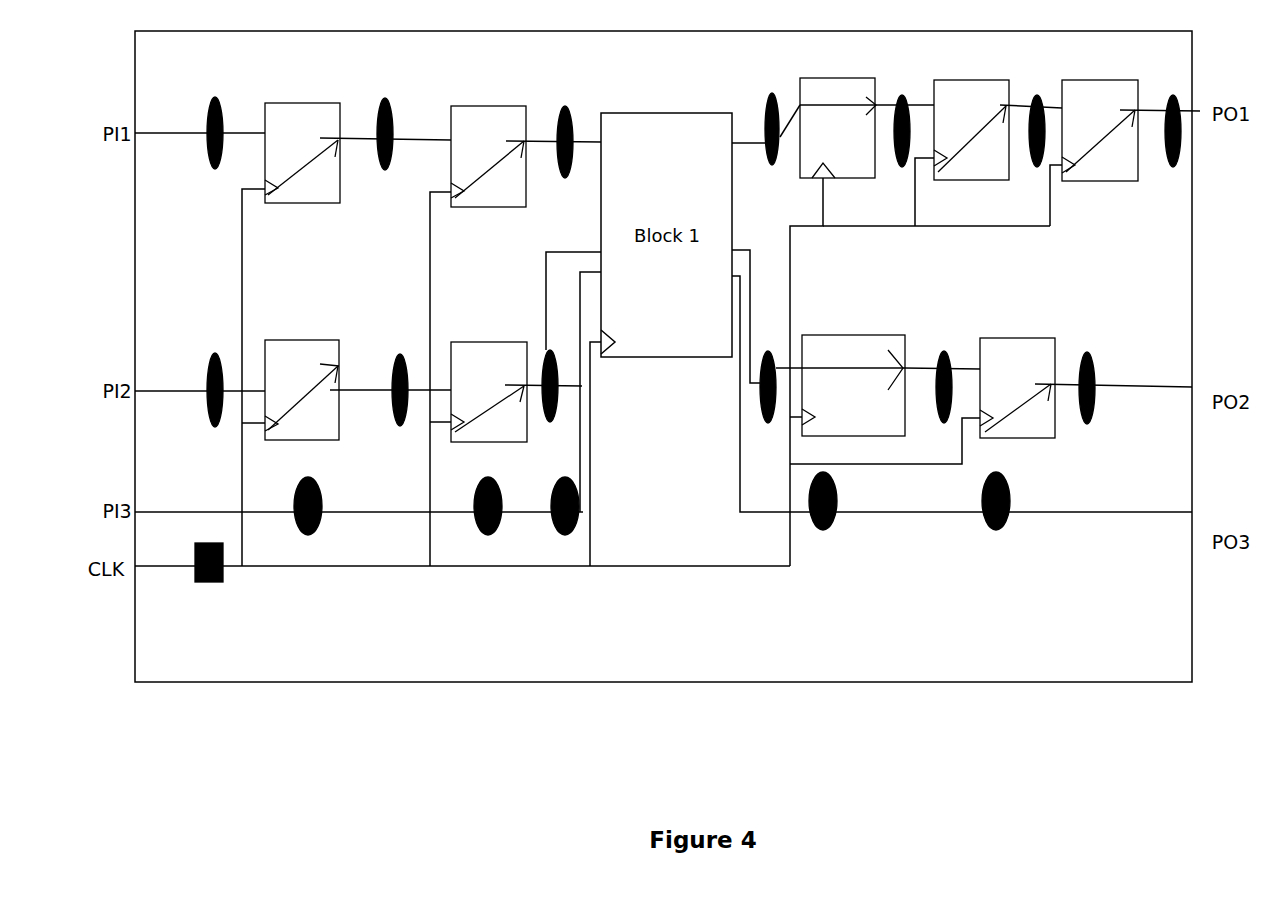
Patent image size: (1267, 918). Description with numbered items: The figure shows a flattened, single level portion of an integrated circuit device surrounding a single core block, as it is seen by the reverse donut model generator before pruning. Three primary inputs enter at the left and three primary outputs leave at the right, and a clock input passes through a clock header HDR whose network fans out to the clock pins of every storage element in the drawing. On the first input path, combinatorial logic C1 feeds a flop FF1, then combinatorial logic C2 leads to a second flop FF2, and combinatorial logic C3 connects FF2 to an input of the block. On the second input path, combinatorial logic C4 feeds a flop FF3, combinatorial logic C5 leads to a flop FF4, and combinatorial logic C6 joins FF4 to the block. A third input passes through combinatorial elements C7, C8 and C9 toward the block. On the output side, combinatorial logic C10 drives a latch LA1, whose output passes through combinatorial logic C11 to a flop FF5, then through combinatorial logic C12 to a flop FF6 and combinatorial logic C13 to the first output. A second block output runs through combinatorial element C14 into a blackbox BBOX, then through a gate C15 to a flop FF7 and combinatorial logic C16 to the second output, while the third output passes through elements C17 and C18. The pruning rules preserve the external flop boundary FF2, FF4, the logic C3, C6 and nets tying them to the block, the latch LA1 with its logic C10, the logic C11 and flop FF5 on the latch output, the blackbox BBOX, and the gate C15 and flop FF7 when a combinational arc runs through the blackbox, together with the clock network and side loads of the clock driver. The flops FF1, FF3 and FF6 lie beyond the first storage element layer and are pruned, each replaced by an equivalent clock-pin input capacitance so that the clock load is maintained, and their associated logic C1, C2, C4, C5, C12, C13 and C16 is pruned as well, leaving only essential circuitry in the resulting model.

The combinatorial logic C1 is at (214, 146).
The combinatorial logic C2 is at (384, 147).
The combinatorial logic C3 is at (564, 158).
The combinatorial logic C4 is at (214, 402).
The combinatorial logic C5 is at (399, 404).
The combinatorial logic C6 is at (559, 401).
The combinatorial logic C7 is at (308, 518).
The combinatorial logic C8 is at (488, 519).
The combinatorial logic C9 is at (565, 519).
The combinatorial logic C10 is at (771, 117).
The combinatorial logic C11 is at (901, 118).
The combinatorial logic C12 is at (1036, 117).
The combinatorial logic C13 is at (1172, 116).
The combinatorial logic C14 is at (769, 374).
The gate C15 is at (944, 373).
The combinatorial logic C16 is at (1085, 375).
The combinatorial logic C17 is at (824, 515).
The combinatorial logic C18 is at (995, 516).
The flop FF1 is at (302, 153).
The external boundary flop FF2 is at (488, 156).
The flop FF3 is at (302, 390).
The external boundary flop FF4 is at (489, 392).
The external boundary flop FF5 is at (971, 130).
The flop FF6 is at (1100, 130).
The external boundary flop FF7 is at (1017, 388).
The latch LA1 is at (838, 128).
The blackbox BBOX is at (853, 385).
The clock header HDR is at (216, 577).